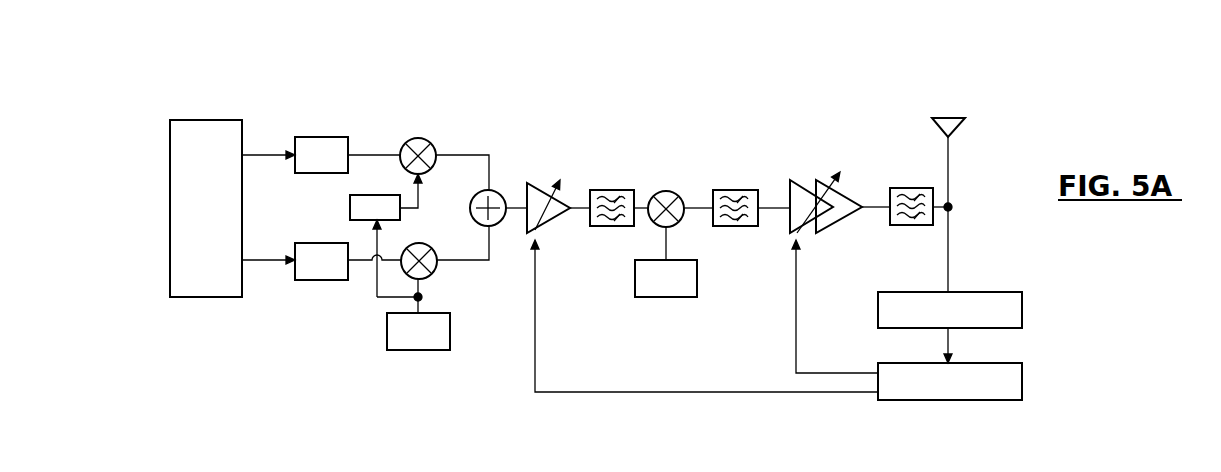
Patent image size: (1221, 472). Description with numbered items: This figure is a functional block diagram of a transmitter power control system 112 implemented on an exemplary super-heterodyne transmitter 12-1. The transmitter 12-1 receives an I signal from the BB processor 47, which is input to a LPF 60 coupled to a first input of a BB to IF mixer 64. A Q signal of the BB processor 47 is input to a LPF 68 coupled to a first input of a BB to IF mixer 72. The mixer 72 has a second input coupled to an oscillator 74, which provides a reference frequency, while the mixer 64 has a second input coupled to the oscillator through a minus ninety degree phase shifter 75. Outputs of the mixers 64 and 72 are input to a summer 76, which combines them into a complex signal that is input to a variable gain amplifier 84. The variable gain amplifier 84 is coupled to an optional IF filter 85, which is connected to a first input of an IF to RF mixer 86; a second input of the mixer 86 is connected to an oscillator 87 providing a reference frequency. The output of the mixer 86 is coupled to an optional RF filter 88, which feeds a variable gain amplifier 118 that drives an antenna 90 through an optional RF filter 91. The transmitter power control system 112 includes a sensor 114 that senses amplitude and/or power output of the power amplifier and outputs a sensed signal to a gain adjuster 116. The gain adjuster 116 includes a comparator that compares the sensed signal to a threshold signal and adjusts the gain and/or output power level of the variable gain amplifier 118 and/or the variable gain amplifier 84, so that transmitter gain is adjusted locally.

The super-heterodyne transmitter 12-1 is at (258, 57).
The BB processor 47 is at (210, 120).
The LPF 60 is at (317, 137).
The BB to IF mixer 64 is at (433, 139).
The LPF 68 is at (323, 282).
The BB to IF mixer 72 is at (433, 275).
The oscillator 74 is at (423, 352).
The −90° phase shifter 75 is at (350, 208).
The summer 76 is at (497, 187).
The variable gain amplifier 84 is at (538, 183).
The IF filter 85 is at (610, 188).
The IF to RF mixer 86 is at (668, 192).
The oscillator 87 is at (672, 298).
The RF filter 88 is at (730, 190).
The antenna 90 is at (958, 127).
The RF filter 91 is at (907, 225).
The transmitter power control system 112 is at (1055, 251).
The sensor 114 is at (1023, 312).
The gain adjuster 116 is at (1023, 383).
The variable gain amplifier 118 is at (845, 190).